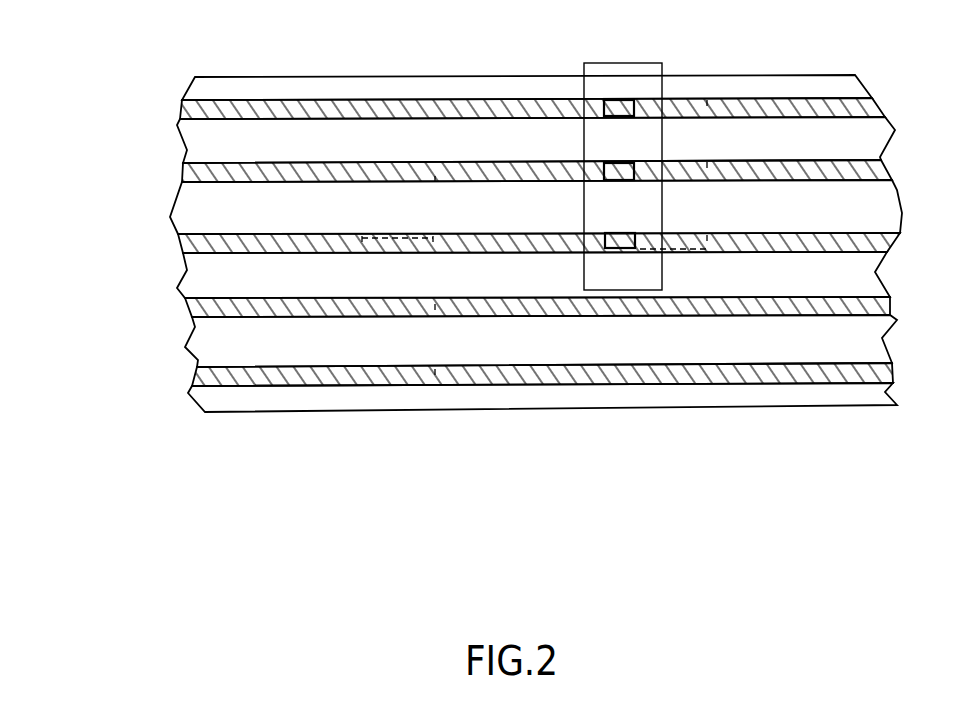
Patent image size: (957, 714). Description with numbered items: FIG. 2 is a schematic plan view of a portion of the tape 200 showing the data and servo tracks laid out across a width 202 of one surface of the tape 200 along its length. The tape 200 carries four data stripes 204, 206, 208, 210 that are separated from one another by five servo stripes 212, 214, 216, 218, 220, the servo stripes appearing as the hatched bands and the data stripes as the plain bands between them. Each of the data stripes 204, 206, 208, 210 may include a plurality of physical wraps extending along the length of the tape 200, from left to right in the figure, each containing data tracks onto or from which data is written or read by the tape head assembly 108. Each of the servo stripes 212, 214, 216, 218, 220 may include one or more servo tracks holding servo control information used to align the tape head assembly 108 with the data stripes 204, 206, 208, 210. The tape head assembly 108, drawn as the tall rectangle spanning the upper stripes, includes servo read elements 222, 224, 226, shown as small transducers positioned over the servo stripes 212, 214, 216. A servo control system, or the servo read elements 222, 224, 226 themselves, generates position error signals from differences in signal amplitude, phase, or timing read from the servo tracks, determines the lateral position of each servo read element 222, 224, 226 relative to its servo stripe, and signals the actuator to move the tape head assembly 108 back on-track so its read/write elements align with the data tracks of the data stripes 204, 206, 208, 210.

The tape 200 is at (357, 53).
The width 202 is at (140, 50).
The data stripe 204 is at (430, 150).
The data stripe 206 is at (430, 216).
The data stripe 208 is at (432, 281).
The data stripe 210 is at (433, 345).
The servo stripe 212 is at (195, 110).
The servo stripe 214 is at (192, 173).
The servo stripe 216 is at (187, 242).
The servo stripe 218 is at (202, 307).
The servo stripe 220 is at (203, 373).
The servo read element 222 is at (622, 118).
The servo read element 224 is at (622, 181).
The servo read element 226 is at (620, 250).
The tape head assembly 108 is at (663, 133).